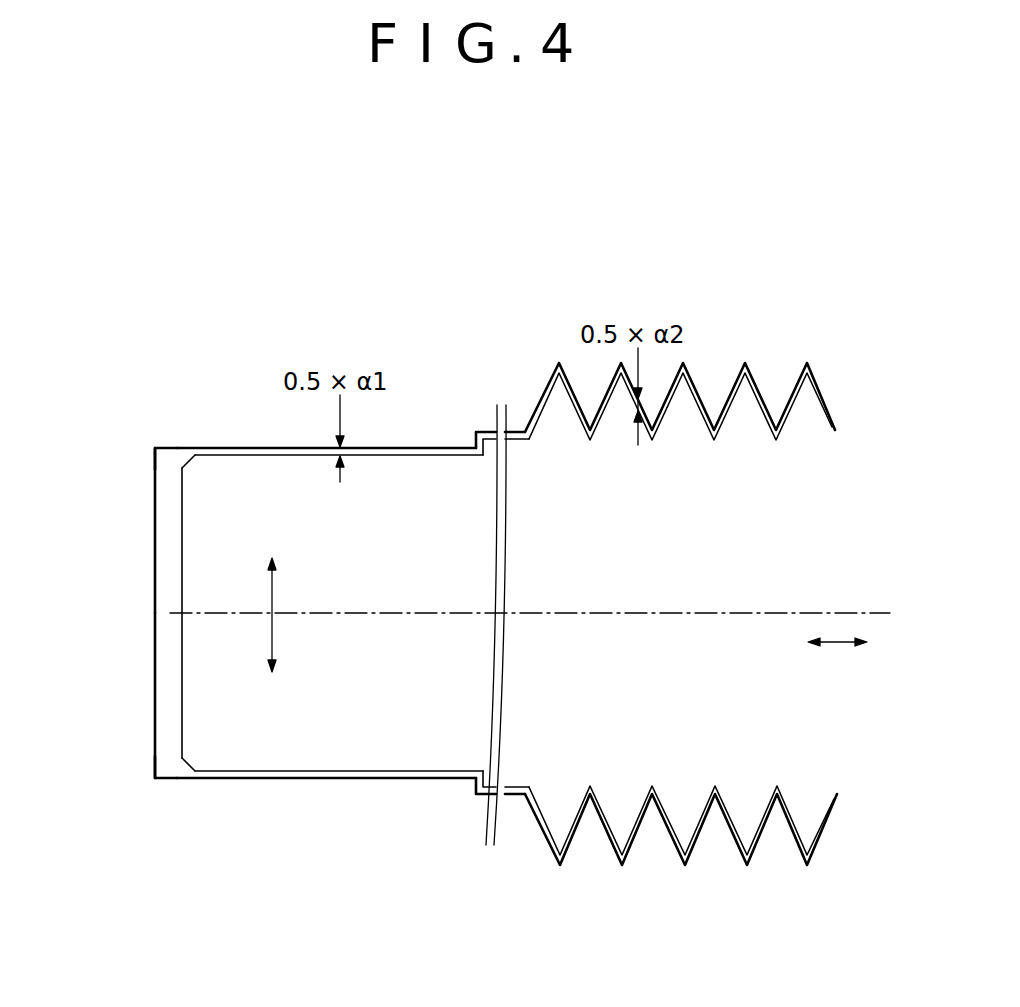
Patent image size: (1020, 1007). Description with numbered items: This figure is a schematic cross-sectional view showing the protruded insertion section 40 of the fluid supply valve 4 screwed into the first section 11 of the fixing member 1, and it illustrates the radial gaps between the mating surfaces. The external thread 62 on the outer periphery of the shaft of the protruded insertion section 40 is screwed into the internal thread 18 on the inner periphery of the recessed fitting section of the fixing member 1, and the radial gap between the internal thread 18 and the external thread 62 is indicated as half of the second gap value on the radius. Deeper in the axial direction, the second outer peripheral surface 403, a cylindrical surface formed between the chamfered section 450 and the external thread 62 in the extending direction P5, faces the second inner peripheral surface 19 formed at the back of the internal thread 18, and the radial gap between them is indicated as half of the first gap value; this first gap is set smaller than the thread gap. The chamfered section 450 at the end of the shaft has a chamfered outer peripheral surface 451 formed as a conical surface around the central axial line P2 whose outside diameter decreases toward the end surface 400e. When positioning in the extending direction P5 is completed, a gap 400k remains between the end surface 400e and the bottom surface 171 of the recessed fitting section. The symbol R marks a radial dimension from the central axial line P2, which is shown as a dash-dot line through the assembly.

The fixing member 1 is at (407, 407).
The first section 11 is at (440, 413).
The internal thread 18 is at (787, 407).
The second inner peripheral surface 19 is at (288, 455).
The external thread 62 is at (823, 403).
The protruded insertion section 40 is at (286, 598).
The fluid supply valve 4 is at (160, 613).
The second outer peripheral surface 403 is at (250, 448).
The chamfered section 450 is at (187, 449).
The chamfered outer peripheral surface 451 is at (157, 448).
The bottom surface 171 is at (157, 575).
The gap 400k is at (168, 652).
The end surface 400e is at (182, 690).
The radius R is at (272, 595).
The central axial line P2 is at (753, 613).
The extending direction P5 is at (840, 644).